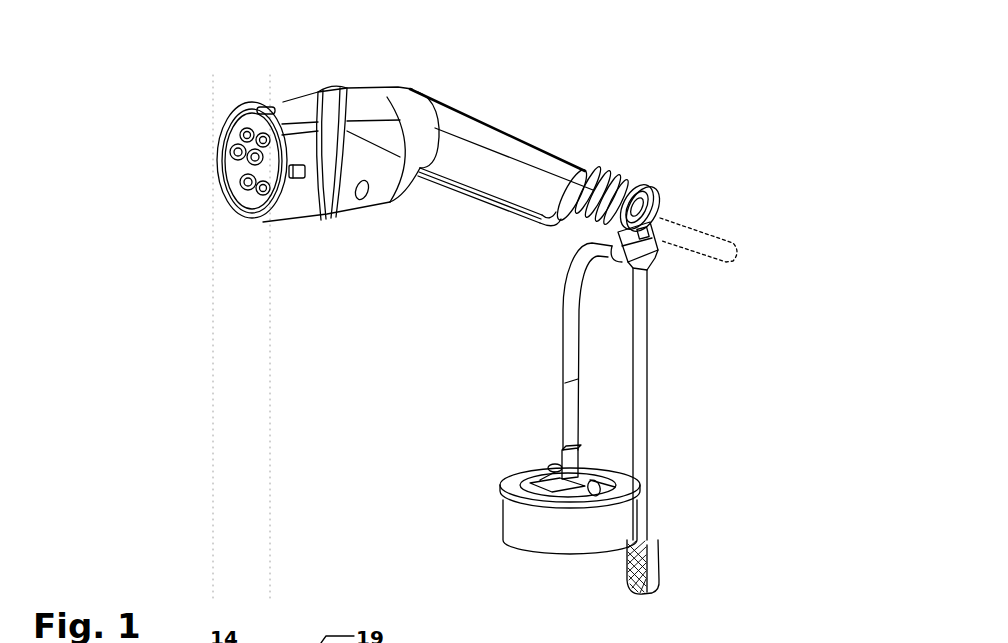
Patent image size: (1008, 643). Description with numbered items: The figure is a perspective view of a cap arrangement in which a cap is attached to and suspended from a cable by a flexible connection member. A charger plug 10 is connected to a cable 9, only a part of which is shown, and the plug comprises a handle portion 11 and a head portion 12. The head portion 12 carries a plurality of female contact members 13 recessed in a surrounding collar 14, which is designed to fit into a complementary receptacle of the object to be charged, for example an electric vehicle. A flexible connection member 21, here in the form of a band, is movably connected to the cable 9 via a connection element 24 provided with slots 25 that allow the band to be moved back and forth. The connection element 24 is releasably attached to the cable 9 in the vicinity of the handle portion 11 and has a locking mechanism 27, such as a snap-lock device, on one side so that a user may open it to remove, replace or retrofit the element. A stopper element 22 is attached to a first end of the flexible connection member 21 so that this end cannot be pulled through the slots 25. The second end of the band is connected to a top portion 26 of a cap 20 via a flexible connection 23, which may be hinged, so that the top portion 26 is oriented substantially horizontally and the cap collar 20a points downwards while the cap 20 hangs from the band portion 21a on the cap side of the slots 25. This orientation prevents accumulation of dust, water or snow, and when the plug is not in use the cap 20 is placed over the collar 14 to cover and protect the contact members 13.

The cable 9 is at (734, 247).
The charger plug 10 is at (513, 48).
The handle portion 11 is at (493, 203).
The head portion 12 is at (342, 77).
The female contact members 13 is at (240, 148).
The collar 14 is at (247, 100).
The cap 20 is at (483, 480).
The cap collar 20a is at (503, 513).
The flexible connection member 21 is at (573, 287).
The band portion 21a is at (563, 363).
The stopper element 22 is at (657, 557).
The flexible connection 23 is at (550, 465).
The connection element 24 is at (666, 190).
The slots 25 is at (644, 257).
The top portion 26 is at (625, 483).
The locking mechanism 27 is at (663, 223).